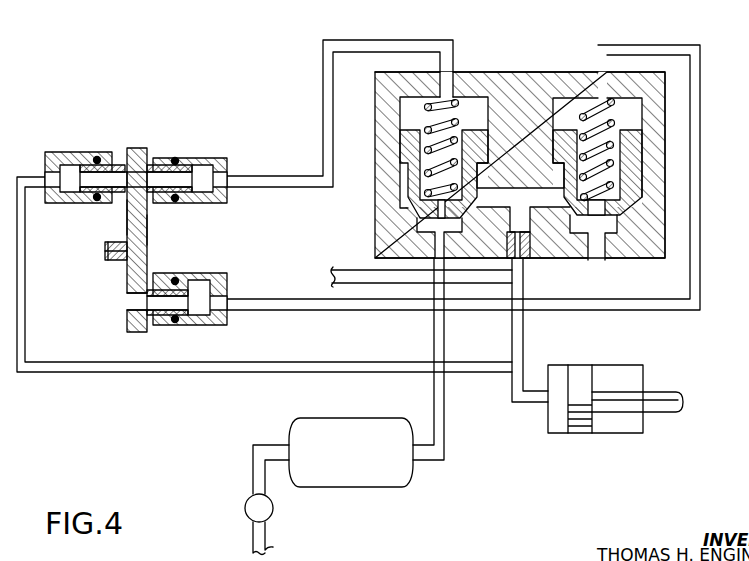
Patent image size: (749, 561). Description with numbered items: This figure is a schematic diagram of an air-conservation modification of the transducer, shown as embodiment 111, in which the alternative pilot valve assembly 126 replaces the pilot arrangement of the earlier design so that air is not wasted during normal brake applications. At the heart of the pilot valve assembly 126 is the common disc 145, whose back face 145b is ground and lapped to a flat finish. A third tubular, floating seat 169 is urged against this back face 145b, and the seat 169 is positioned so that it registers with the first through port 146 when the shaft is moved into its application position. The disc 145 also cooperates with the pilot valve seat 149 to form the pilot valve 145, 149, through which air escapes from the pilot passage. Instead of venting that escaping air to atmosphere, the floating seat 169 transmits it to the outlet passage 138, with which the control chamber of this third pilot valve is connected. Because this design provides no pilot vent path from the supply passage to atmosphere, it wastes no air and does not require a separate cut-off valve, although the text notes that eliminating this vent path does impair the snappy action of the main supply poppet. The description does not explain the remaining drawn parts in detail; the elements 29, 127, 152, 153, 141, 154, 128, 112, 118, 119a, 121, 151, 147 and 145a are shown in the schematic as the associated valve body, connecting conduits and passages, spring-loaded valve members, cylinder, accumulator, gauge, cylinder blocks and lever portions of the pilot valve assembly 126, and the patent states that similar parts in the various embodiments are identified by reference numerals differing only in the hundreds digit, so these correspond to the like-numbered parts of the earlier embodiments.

The embodiment 111 is at (281, 48).
The valve body 29 is at (529, 64).
The conduit 127 is at (286, 178).
The spring loaded valve piston 152 is at (407, 179).
The spring loaded valve piston 153 is at (633, 190).
The conduit 141 is at (344, 268).
The conduit 154 is at (434, 336).
The outlet passage 138 is at (520, 339).
The conduit 128 is at (286, 306).
The hydraulic cylinder 112 is at (585, 373).
The accumulator 118 is at (355, 473).
The conduit 119a is at (252, 460).
The valve 121 is at (273, 510).
The tubular floating seat 169 is at (122, 162).
The pilot valve seat 149 is at (155, 160).
The cylinder block 151 is at (150, 313).
The first through port 146 is at (136, 147).
The lever lower portion 147 is at (127, 298).
The back face 145b is at (127, 216).
The lever arm 145a is at (148, 231).
The disc 145 is at (126, 272).
The pilot valve assembly 126 is at (182, 249).